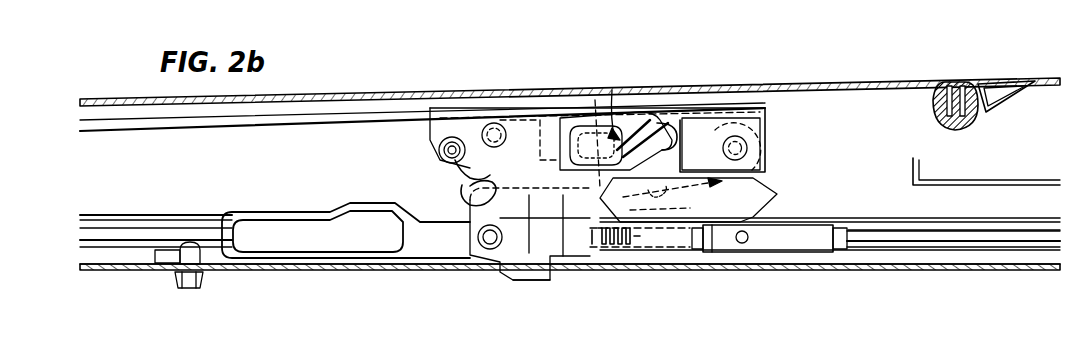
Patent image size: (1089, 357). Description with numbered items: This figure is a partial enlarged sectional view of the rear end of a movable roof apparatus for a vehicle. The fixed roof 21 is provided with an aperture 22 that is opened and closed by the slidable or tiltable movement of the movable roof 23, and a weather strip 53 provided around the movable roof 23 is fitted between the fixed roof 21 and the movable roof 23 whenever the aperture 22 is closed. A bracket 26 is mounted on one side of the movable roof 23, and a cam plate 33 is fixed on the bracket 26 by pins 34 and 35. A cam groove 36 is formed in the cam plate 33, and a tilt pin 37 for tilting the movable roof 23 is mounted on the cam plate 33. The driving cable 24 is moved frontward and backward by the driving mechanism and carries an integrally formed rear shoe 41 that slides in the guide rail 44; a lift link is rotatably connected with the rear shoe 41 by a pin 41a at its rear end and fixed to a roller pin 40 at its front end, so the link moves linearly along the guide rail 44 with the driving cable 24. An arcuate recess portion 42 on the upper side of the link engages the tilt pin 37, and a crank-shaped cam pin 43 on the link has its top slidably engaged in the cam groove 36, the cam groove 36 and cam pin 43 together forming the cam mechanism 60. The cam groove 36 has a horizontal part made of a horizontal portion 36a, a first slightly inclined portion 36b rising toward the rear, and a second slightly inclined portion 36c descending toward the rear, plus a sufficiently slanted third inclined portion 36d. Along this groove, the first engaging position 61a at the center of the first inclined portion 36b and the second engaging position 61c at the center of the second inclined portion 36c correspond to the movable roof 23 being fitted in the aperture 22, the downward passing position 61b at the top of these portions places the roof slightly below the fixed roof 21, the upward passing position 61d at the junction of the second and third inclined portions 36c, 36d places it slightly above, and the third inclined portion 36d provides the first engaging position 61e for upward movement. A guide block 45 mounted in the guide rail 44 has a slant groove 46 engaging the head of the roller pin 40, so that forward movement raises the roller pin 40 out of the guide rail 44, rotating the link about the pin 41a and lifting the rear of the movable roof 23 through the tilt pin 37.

The fixed roof 21 is at (1012, 83).
The aperture 22 is at (1004, 159).
The movable roof 23 is at (554, 96).
The driving cable 24 is at (600, 262).
The bracket 26 is at (328, 120).
The cam plate 33 is at (532, 118).
The pin 34 is at (494, 124).
The pin 35 is at (740, 148).
The cam groove 36 is at (648, 132).
The horizontal portion 36a is at (460, 170).
The first slightly inclined portion 36b is at (466, 188).
The second slightly inclined portion 36c is at (592, 100).
The third inclined portion 36d is at (666, 140).
The tilt pin 37 is at (452, 148).
The roller pin 40 is at (482, 260).
The rear shoe 41 is at (795, 252).
The pin 41a is at (742, 244).
The arcuate recess portion 42 is at (530, 140).
The cam pin 43 is at (596, 145).
The guide rail 44 is at (1000, 220).
The guide block 45 is at (406, 262).
The slant groove 46 is at (410, 222).
The weather strip 53 is at (962, 82).
The cam mechanism 60 is at (612, 100).
The first engaging position 61a is at (478, 228).
The downward passing position 61b is at (530, 222).
The second engaging position 61c is at (563, 258).
The upward passing position 61d is at (642, 250).
The first engaging position for upward movement 61e is at (676, 208).